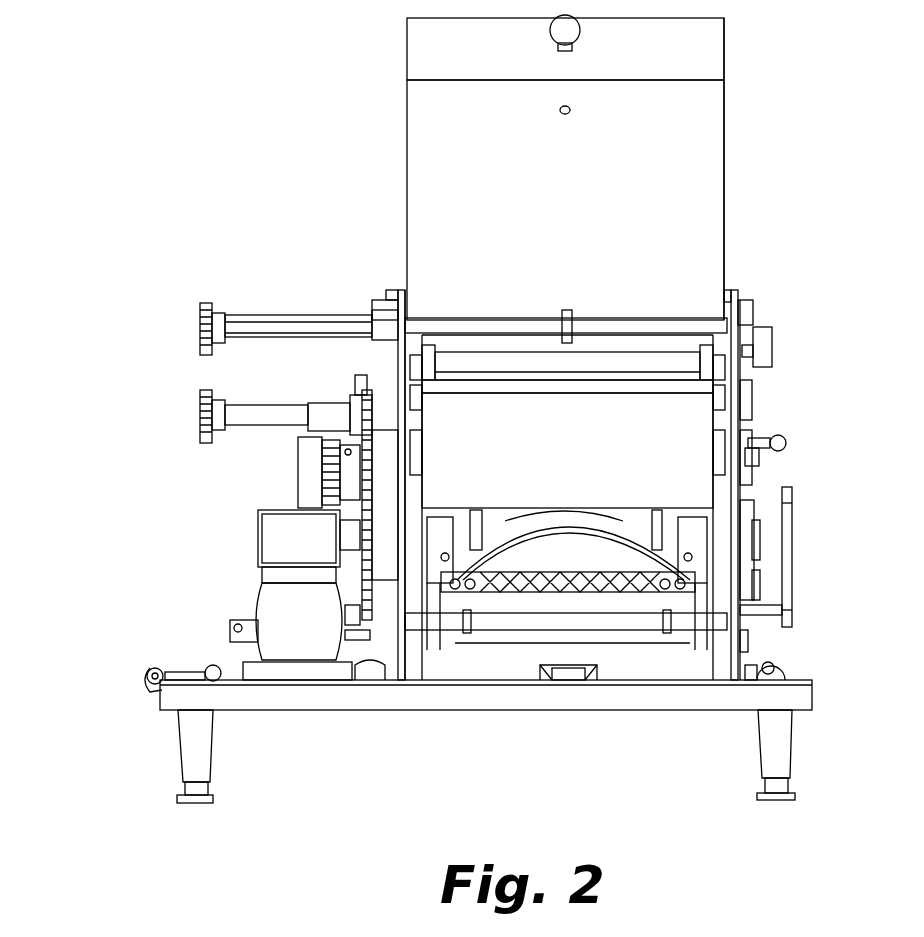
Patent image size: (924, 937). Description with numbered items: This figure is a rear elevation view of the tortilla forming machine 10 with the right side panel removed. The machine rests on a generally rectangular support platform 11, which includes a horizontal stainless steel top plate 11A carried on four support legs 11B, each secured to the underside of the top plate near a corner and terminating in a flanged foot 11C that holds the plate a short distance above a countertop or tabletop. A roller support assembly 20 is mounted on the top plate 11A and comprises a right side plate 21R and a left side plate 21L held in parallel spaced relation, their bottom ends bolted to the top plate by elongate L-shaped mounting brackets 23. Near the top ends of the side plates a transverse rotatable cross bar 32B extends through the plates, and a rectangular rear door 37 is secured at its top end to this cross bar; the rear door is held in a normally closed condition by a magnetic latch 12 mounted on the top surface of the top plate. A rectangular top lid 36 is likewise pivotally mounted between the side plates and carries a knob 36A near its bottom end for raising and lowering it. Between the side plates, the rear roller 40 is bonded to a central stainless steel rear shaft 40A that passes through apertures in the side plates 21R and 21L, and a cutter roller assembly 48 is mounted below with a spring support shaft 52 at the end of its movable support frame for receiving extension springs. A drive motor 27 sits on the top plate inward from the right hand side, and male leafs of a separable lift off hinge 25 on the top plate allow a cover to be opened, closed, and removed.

The tortilla forming machine 10 is at (222, 182).
The support platform 11 is at (528, 735).
The top plate 11A is at (800, 680).
The support legs 11B is at (215, 757).
The flanged foot 11C is at (196, 803).
The magnetic latch 12 is at (564, 672).
The roller support assembly 20 is at (578, 485).
The left side plate 21L is at (745, 420).
The right side plate 21R is at (400, 385).
The L-shaped mounting brackets 23 is at (748, 672).
The separable lift off hinge 25 is at (205, 668).
The drive motor 27 is at (318, 626).
The transverse rotatable cross bar 32B is at (612, 326).
The top lid 36 is at (640, 69).
The knob 36A is at (548, 38).
The rear door 37 is at (582, 170).
The rear roller 40 is at (582, 484).
The rear shaft 40A is at (425, 452).
The cutter roller assembly 48 is at (545, 548).
The spring support shaft 52 is at (796, 594).